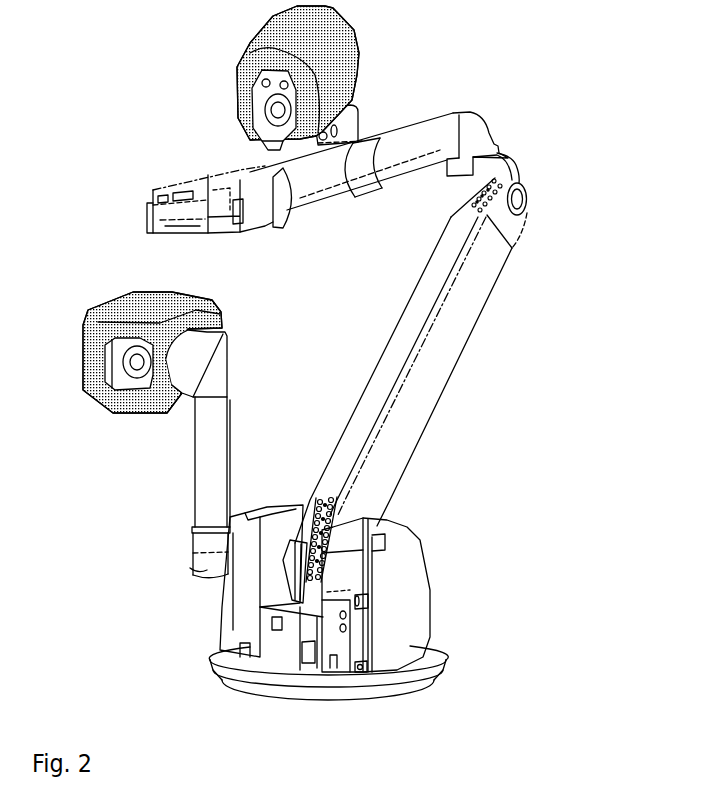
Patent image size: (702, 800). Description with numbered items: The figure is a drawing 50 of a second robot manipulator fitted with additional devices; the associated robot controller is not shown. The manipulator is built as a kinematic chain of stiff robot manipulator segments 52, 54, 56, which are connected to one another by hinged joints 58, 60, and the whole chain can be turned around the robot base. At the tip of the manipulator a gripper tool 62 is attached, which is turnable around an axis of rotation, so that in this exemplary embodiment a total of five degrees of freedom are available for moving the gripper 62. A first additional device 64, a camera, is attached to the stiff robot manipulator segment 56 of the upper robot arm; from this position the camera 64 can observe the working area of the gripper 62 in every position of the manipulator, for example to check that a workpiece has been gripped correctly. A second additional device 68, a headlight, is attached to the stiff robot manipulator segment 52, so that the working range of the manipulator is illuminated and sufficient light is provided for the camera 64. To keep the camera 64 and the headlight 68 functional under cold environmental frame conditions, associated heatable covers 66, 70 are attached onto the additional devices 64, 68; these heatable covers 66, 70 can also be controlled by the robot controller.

The drawing 50 is at (609, 691).
The stiff robot manipulator segment 52 is at (395, 590).
The stiff robot manipulator segment 54 is at (412, 431).
The stiff robot manipulator segment 56 is at (392, 146).
The hinged joint 58 is at (287, 562).
The hinged joint 60 is at (528, 200).
The gripper tool 62 is at (167, 218).
The first additional device 64 is at (278, 110).
The heatable cover 66 is at (285, 30).
The second additional device 68 is at (137, 361).
The heatable cover 70 is at (143, 311).